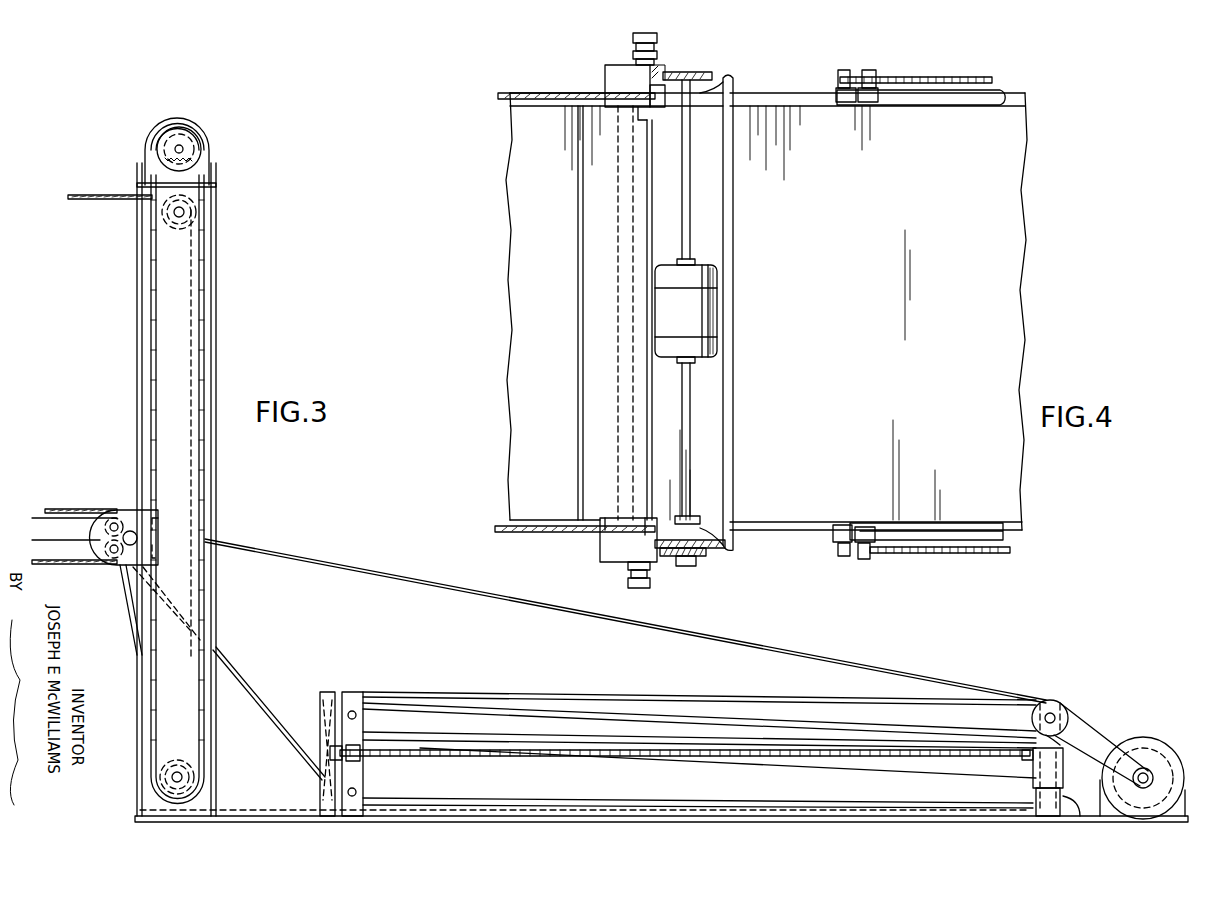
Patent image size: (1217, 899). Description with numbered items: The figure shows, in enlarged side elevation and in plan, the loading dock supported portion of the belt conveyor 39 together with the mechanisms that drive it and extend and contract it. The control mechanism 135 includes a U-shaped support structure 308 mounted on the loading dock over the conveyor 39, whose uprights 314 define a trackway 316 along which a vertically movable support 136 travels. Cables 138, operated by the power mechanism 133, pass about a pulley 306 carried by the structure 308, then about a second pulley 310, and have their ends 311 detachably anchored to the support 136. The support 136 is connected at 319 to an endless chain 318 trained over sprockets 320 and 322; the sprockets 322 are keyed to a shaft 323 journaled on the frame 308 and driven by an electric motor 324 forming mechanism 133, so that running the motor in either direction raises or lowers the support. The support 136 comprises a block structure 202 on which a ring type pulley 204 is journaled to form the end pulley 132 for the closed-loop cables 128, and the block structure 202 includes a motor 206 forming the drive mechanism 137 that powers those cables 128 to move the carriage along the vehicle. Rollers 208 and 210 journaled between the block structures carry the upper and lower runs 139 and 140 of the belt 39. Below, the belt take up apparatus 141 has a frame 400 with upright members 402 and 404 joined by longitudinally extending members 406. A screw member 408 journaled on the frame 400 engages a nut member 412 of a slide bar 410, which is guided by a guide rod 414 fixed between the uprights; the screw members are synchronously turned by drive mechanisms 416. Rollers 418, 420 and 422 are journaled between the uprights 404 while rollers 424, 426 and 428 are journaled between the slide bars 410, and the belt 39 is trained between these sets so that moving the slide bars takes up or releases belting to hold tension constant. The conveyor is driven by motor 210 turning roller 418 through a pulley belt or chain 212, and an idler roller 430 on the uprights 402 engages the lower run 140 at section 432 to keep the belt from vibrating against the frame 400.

In FIG. 4, the belt conveyor 39 is at (1012, 240).
In FIG. 3, the cables 128 is at (60, 564).
In FIG. 4, the end pulley 132 is at (600, 536).
In FIG. 3, the power mechanism 133 is at (196, 143).
In FIG. 4, the power mechanism 133 is at (720, 310).
In FIG. 3, the control mechanism 135 is at (262, 158).
In FIG. 3, the vertically movable support 136 is at (130, 510).
In FIG. 4, the drive mechanism 137 is at (668, 52).
In FIG. 4, the cables 138 is at (500, 520).
In FIG. 3, the upper run 139 is at (60, 510).
In FIG. 3, the lower run 140 is at (100, 563).
In FIG. 3, the belt take up apparatus 141 is at (1098, 826).
In FIG. 4, the block structure 202 is at (615, 565).
In FIG. 4, the ring type pulley 204 is at (606, 520).
In FIG. 4, the motor 206 is at (640, 590).
In FIG. 3, the roller 208 is at (110, 508).
In FIG. 3, the roller 210 is at (118, 568).
In FIG. 3, the pulley belt or chain 212 is at (1097, 747).
In FIG. 3, the pulley 306 is at (196, 205).
In FIG. 3, the support structure 308 is at (220, 262).
In FIG. 4, the support structure 308 is at (737, 75).
In FIG. 3, the second pulley 310 is at (206, 778).
In FIG. 3, the cable ends 311 is at (122, 590).
In FIG. 3, the uprights 314 is at (206, 478).
In FIG. 4, the uprights 314 is at (716, 525).
In FIG. 3, the trackway 316 is at (166, 609).
In FIG. 4, the trackway 316 is at (605, 552).
In FIG. 3, the endless chain 318 is at (206, 354).
In FIG. 4, the endless chain 318 is at (706, 554).
In FIG. 3, the connection 319 is at (160, 530).
In FIG. 4, the connection 319 is at (660, 566).
In FIG. 3, the sprocket 320 is at (202, 148).
In FIG. 3, the sprocket 322 is at (182, 803).
In FIG. 4, the shaft 323 is at (705, 445).
In FIG. 4, the electric motor 324 is at (718, 350).
In FIG. 3, the frame 400 is at (468, 690).
In FIG. 3, the upright member 402 is at (350, 692).
In FIG. 4, the upright member 402 is at (845, 525).
In FIG. 3, the upright member 404 is at (1058, 700).
In FIG. 3, the longitudinally extending member 406 is at (928, 693).
In FIG. 3, the screw member 408 is at (530, 757).
In FIG. 4, the screw member 408 is at (960, 77).
In FIG. 3, the slide bar 410 is at (366, 700).
In FIG. 4, the slide bar 410 is at (840, 546).
In FIG. 3, the nut member 412 is at (366, 756).
In FIG. 4, the nut member 412 is at (866, 562).
In FIG. 3, the guide rod 414 is at (858, 698).
In FIG. 4, the guide rod 414 is at (985, 106).
In FIG. 3, the drive mechanism 416 is at (1045, 810).
In FIG. 3, the roller 418 is at (1070, 712).
In FIG. 3, the roller 420 is at (1105, 728).
In FIG. 3, the roller 422 is at (1068, 812).
In FIG. 3, the roller 424 is at (370, 712).
In FIG. 3, the roller 426 is at (363, 750).
In FIG. 3, the roller 428 is at (366, 796).
In FIG. 3, the idler roller 430 is at (326, 692).
In FIG. 3, the belt section 432 is at (250, 693).